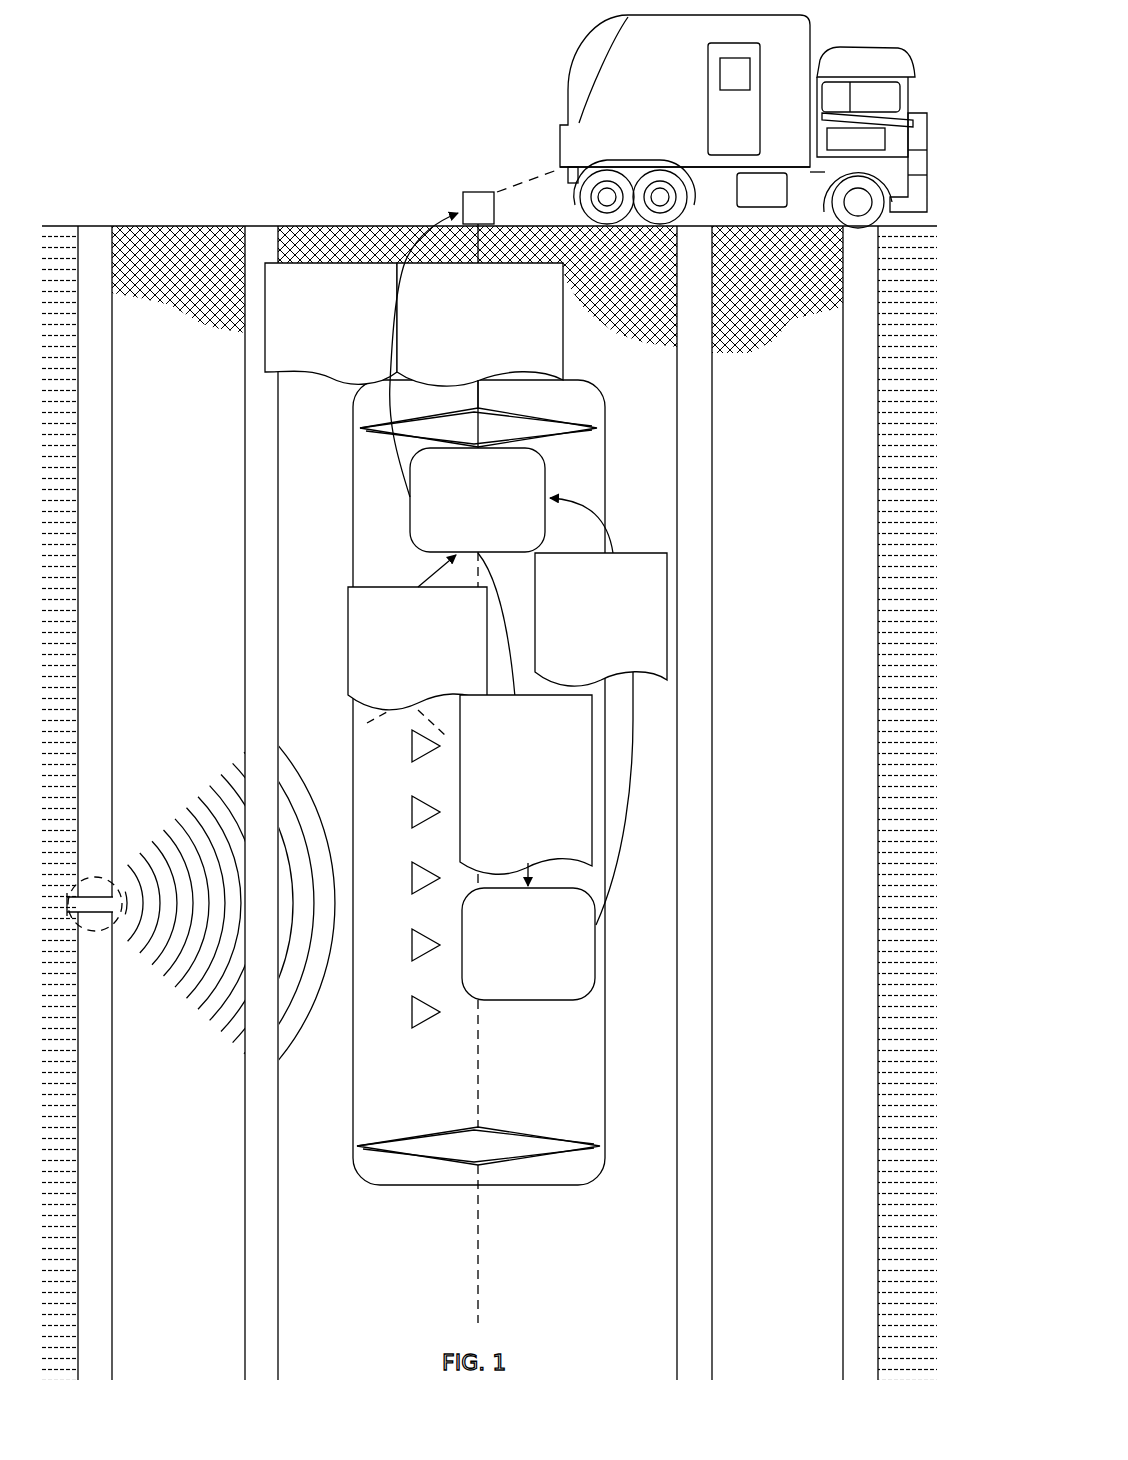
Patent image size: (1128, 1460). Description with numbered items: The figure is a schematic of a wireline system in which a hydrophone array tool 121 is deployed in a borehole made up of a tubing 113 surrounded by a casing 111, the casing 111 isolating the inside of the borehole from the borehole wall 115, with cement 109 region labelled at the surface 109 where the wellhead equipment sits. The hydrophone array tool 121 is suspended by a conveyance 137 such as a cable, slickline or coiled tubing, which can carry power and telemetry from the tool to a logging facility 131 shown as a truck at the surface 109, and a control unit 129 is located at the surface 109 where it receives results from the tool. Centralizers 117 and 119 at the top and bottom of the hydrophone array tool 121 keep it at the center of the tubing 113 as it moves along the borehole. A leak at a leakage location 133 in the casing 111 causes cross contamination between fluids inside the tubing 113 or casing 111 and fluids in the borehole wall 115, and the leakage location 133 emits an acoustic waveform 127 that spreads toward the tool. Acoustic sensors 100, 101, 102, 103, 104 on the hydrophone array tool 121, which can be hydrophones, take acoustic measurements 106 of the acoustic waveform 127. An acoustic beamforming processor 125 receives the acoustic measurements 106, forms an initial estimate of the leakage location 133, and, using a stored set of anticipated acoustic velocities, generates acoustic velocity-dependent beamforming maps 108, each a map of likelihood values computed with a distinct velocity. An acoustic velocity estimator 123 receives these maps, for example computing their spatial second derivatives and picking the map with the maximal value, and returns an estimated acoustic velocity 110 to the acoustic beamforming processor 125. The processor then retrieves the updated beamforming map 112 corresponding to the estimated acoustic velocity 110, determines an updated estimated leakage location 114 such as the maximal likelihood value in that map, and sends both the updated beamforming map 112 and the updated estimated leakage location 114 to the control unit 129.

The acoustic sensor 100 is at (410, 746).
The acoustic sensor 101 is at (410, 812).
The acoustic sensor 102 is at (410, 878).
The acoustic sensor 103 is at (410, 945).
The acoustic sensor 104 is at (410, 1012).
The acoustic measurements 106 is at (417, 632).
The acoustic velocity-dependent beamforming maps 108 is at (526, 713).
The surface 109 is at (152, 212).
The estimated acoustic velocity 110 is at (601, 592).
The casing 111 is at (98, 214).
The updated beamforming map 112 is at (331, 323).
The tubing 113 is at (266, 214).
The updated estimated leakage location 114 is at (480, 335).
The borehole wall 115 is at (62, 214).
The centralizer 117 is at (588, 423).
The centralizer 119 is at (497, 1128).
The hydrophone array tool 121 is at (592, 374).
The acoustic velocity estimator 123 is at (547, 836).
The acoustic beamforming processor 125 is at (467, 382).
The acoustic waveform 127 is at (163, 836).
The control unit 129 is at (479, 189).
The logging facility 131 is at (857, 48).
The leakage location 133 is at (102, 871).
The conveyance 137 is at (476, 1255).